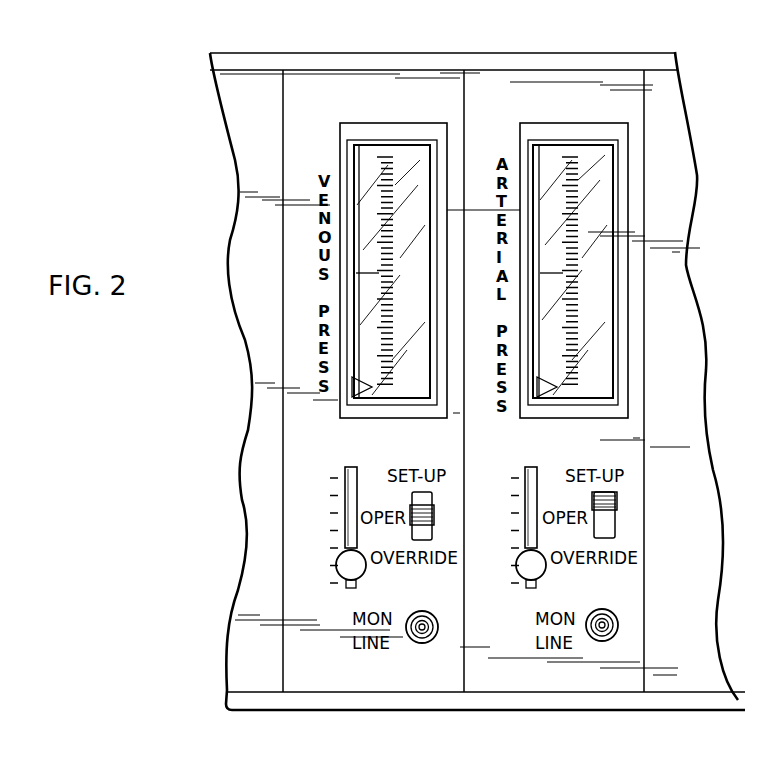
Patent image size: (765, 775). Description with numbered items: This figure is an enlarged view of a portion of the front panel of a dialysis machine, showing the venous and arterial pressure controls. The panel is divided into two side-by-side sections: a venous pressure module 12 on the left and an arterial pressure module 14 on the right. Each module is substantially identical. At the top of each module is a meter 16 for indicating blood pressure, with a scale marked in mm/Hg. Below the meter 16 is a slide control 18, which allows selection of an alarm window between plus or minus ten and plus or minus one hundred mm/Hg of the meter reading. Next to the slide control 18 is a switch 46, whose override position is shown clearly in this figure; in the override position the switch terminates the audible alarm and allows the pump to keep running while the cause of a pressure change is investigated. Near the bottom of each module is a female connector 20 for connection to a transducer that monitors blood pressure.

The venous pressure module 12 is at (337, 86).
The arterial pressure module 14 is at (535, 85).
The meter 16 is at (365, 152).
The slide control 18 is at (366, 573).
The female connector 20 is at (434, 638).
The switch 46 is at (452, 508).